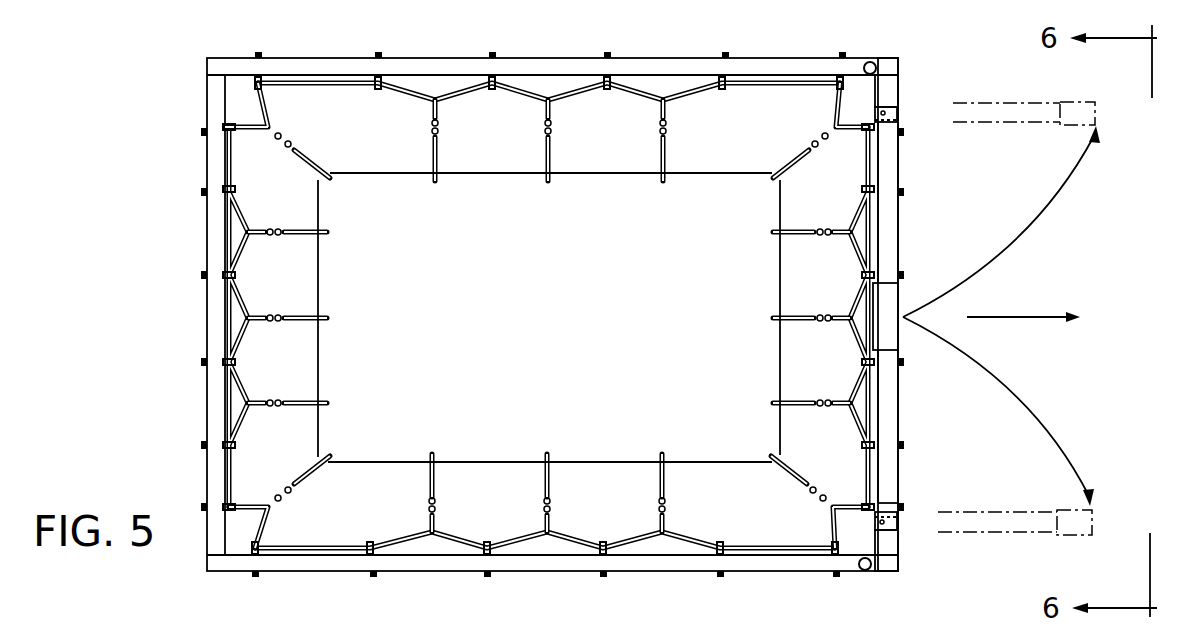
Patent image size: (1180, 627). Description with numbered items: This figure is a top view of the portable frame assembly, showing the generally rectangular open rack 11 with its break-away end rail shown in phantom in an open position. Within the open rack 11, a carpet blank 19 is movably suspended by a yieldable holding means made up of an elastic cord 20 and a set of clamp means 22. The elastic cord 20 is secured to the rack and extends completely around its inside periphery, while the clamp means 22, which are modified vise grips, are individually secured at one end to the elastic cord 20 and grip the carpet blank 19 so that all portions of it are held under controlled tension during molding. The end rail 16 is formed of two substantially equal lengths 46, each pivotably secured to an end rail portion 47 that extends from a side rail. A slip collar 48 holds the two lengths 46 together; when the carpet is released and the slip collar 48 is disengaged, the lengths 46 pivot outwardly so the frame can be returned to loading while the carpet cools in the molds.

The open rack 11 is at (317, 58).
The end rail 16 is at (888, 170).
The carpet blank 19 is at (560, 296).
The elastic cord 20 is at (473, 83).
The clamp means 22 is at (538, 137).
The end rail length 46 is at (888, 237).
The end rail portion 47 is at (890, 95).
The slip collar 48 is at (887, 328).